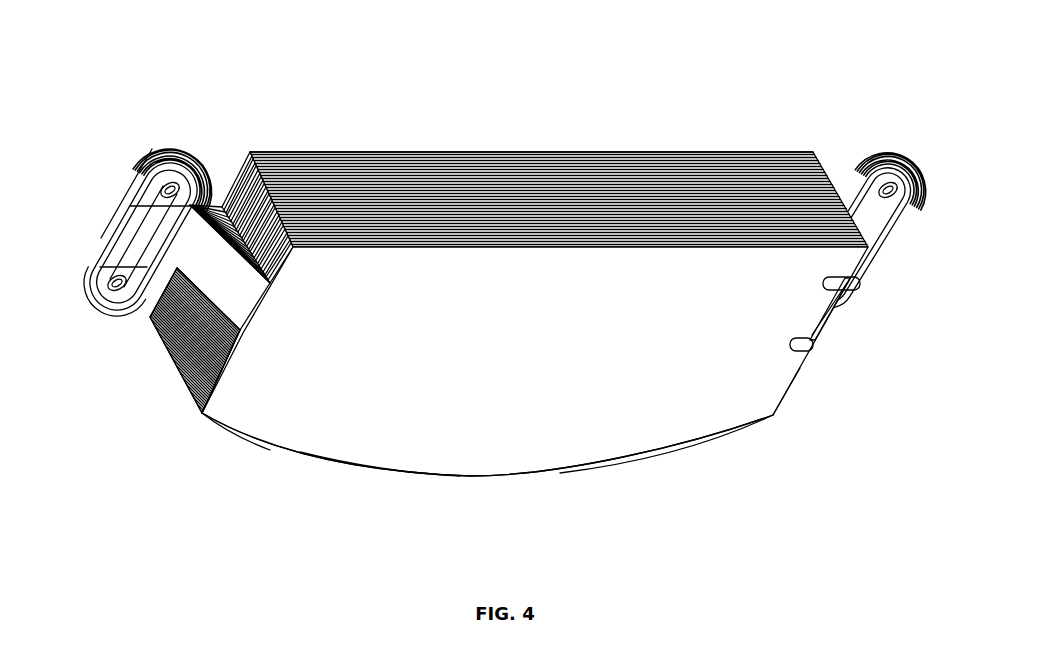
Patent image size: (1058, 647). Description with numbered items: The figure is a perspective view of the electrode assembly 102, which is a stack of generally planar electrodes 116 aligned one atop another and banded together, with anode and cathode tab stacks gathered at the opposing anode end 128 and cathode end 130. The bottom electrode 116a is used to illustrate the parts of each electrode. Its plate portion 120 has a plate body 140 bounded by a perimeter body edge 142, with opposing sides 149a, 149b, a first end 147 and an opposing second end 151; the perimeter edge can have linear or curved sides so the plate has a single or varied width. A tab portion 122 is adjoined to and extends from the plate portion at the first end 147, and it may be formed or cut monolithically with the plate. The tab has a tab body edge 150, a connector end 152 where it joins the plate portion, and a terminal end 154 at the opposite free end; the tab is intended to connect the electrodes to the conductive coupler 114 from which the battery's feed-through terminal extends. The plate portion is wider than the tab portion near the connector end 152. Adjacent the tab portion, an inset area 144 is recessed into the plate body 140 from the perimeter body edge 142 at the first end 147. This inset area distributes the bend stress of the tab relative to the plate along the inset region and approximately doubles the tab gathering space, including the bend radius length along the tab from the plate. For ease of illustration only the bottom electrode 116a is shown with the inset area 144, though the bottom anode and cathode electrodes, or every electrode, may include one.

The electrode assembly 102 is at (126, 44).
The conductive coupler 114 is at (178, 152).
The electrode 116 is at (648, 151).
The bottom electrode 116a is at (488, 361).
The plate portion 120 is at (550, 448).
The tab portion 122 is at (158, 338).
The anode end 128 is at (906, 136).
The cathode end 130 is at (103, 166).
The plate body 140 is at (368, 448).
The perimeter body edge 142 is at (259, 447).
The inset area 144 is at (858, 283).
The first end 147 is at (788, 395).
The opposing side 149a is at (525, 215).
The opposing side 149b is at (660, 445).
The tab body edge 150 is at (208, 203).
The second end 151 is at (185, 402).
The connector end 152 is at (843, 313).
The terminal end 154 is at (105, 240).